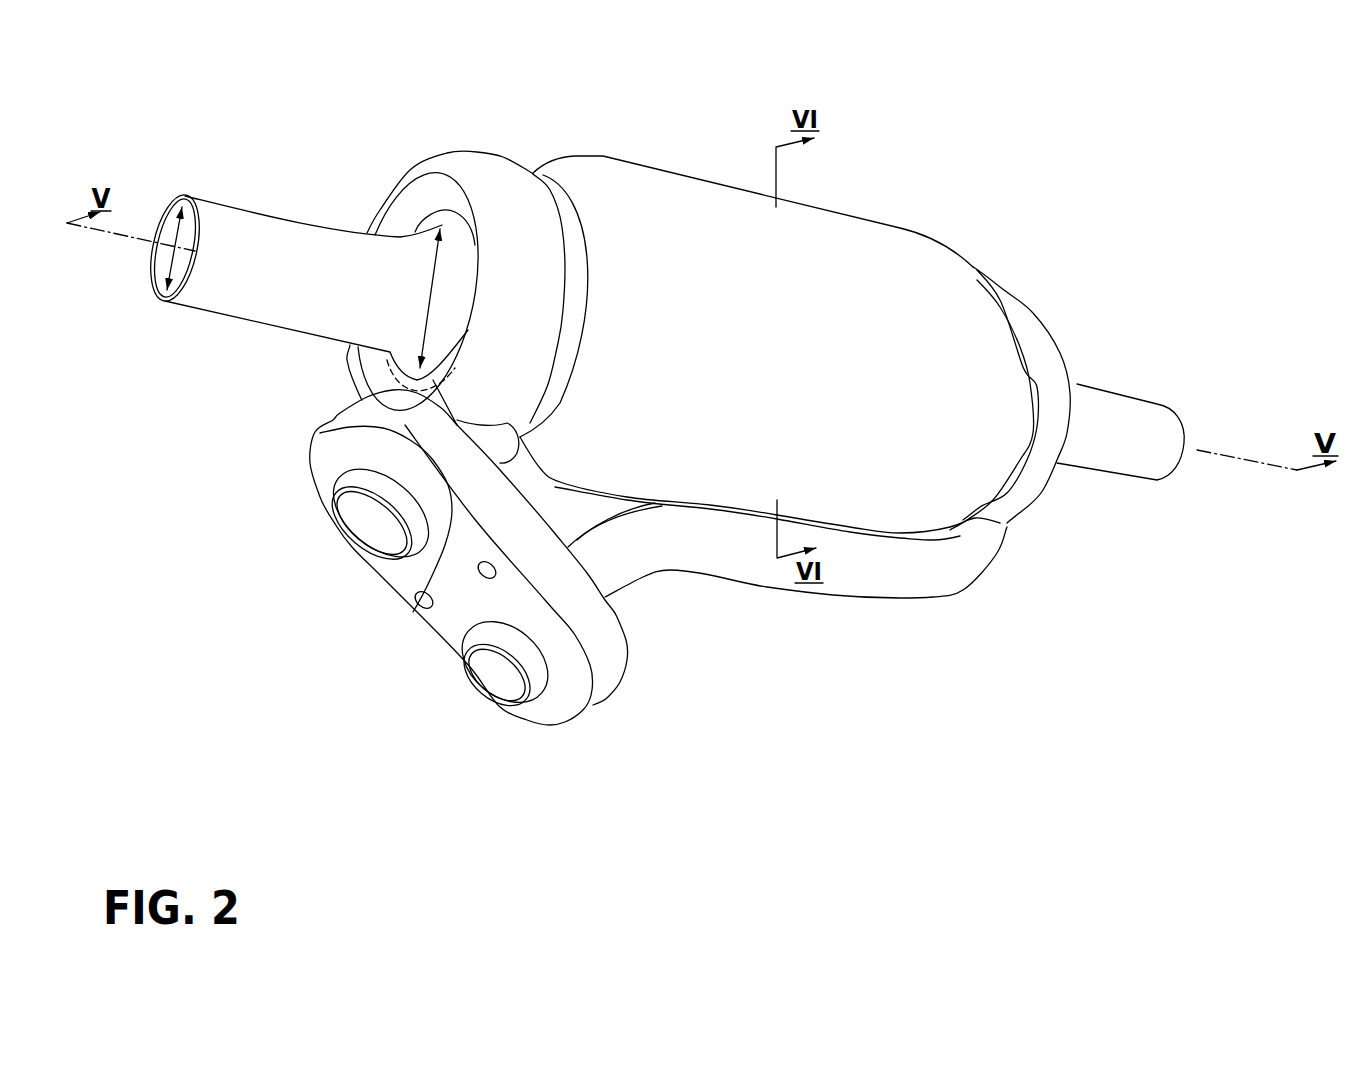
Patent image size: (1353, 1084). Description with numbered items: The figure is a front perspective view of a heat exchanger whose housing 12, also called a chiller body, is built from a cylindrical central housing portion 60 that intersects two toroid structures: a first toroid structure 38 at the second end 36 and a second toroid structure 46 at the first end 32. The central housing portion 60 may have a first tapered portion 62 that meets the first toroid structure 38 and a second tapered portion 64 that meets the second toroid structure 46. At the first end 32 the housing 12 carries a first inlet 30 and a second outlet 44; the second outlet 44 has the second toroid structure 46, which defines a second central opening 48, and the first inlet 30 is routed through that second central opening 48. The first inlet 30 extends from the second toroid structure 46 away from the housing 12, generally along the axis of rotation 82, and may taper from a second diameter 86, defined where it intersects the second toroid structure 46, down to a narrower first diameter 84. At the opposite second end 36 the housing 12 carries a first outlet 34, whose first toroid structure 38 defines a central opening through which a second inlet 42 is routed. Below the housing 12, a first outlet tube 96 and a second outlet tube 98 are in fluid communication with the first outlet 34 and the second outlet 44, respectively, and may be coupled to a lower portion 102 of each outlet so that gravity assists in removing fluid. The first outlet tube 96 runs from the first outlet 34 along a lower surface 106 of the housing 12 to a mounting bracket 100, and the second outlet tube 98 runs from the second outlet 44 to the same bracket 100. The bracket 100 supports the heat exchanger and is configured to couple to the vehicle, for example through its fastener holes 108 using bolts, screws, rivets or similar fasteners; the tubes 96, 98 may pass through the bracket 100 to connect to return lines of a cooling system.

The housing 12 is at (760, 317).
The first inlet 30 is at (258, 230).
The first end 32 is at (402, 255).
The first outlet 34 is at (1031, 488).
The second end 36 is at (1056, 376).
The first toroid structure 38 is at (1031, 310).
The second inlet 42 is at (1146, 413).
The second outlet 44 is at (479, 555).
The second toroid structure 46 is at (477, 150).
The second central opening 48 is at (394, 224).
The central housing portion 60 is at (741, 189).
The first tapered portion 62 is at (950, 262).
The second tapered portion 64 is at (570, 155).
The axis of rotation 82 is at (1198, 452).
The first diameter 84 is at (168, 258).
The second diameter 86 is at (428, 307).
The first outlet tube 96 is at (781, 581).
The second outlet tube 98 is at (397, 580).
The mounting bracket 100 is at (607, 654).
The lower portion 102 is at (452, 424).
The lower surface 106 is at (850, 529).
The fastener holes 108 is at (487, 579).